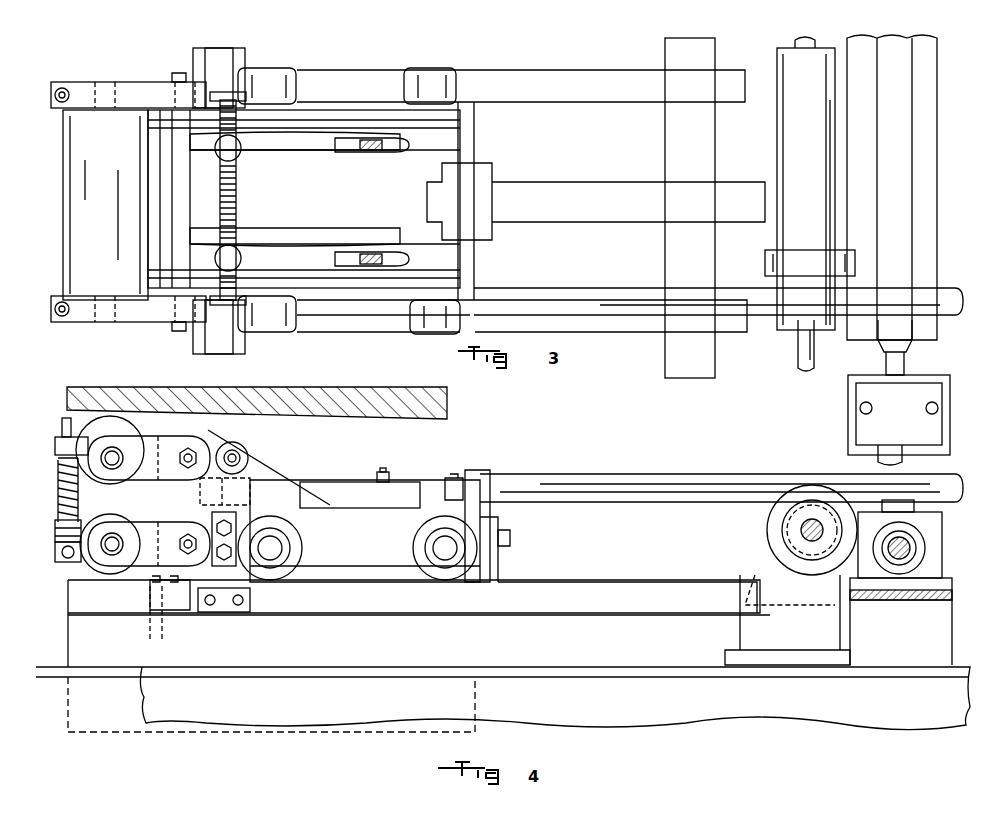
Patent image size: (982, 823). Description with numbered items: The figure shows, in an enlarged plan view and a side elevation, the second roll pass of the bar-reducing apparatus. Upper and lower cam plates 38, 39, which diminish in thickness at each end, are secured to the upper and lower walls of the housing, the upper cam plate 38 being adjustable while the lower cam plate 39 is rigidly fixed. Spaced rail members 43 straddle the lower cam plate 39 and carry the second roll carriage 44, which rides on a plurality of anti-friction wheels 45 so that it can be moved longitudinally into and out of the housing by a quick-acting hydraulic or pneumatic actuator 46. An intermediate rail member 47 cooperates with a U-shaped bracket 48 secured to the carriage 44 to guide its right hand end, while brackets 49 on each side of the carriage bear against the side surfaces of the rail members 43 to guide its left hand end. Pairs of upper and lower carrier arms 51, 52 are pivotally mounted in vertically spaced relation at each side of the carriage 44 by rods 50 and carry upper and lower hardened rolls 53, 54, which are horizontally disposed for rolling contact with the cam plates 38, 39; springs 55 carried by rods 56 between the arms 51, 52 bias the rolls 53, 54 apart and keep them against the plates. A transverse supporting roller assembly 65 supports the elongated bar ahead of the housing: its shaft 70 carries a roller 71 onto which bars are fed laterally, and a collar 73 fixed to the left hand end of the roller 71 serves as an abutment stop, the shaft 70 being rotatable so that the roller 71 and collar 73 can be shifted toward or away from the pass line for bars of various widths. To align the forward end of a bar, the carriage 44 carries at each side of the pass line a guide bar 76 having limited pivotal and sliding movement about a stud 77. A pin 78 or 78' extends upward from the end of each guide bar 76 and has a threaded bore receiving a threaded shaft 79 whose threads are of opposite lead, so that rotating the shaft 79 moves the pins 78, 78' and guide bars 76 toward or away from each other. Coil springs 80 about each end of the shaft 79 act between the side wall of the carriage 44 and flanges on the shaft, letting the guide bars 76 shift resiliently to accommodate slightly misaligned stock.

In FIG. 4, the upper cam plate 38 is at (446, 410).
In FIG. 4, the lower cam plate 39 is at (80, 602).
In FIG. 3, the rail members 43 is at (503, 92).
In FIG. 4, the rail members 43 is at (572, 588).
In FIG. 3, the second roll carriage 44 is at (352, 215).
In FIG. 4, the second roll carriage 44 is at (376, 561).
In FIG. 3, the anti-friction wheels 45 is at (456, 70).
In FIG. 4, the anti-friction wheels 45 is at (292, 542).
In FIG. 3, the hydraulic or pneumatic actuator 46 is at (594, 296).
In FIG. 4, the hydraulic or pneumatic actuator 46 is at (602, 476).
In FIG. 3, the rail member 47 is at (594, 184).
In FIG. 3, the U-shaped bracket 48 is at (488, 176).
In FIG. 3, the brackets 49 is at (238, 62).
In FIG. 4, the brackets 49 is at (250, 592).
In FIG. 3, the rods 50 is at (178, 73).
In FIG. 4, the rods 50 is at (192, 457).
In FIG. 3, the upper carrier arms 51 is at (80, 82).
In FIG. 4, the upper carrier arms 51 is at (161, 468).
In FIG. 4, the lower carrier arms 52 is at (146, 530).
In FIG. 3, the upper hardened roll 53 is at (66, 236).
In FIG. 4, the upper hardened roll 53 is at (114, 428).
In FIG. 4, the lower hardened roll 54 is at (118, 578).
In FIG. 4, the springs 55 is at (58, 484).
In FIG. 3, the rods 56 is at (56, 84).
In FIG. 4, the rods 56 is at (62, 426).
In FIG. 3, the transverse supporting roller assemblies 65 is at (777, 140).
In FIG. 4, the transverse supporting roller assemblies 65 is at (766, 525).
In FIG. 3, the shaft 70 is at (797, 348).
In FIG. 4, the shaft 70 is at (812, 541).
In FIG. 3, the roller 71 is at (782, 64).
In FIG. 3, the collar 73 is at (766, 252).
In FIG. 4, the collar 73 is at (766, 536).
In FIG. 3, the guide bar 76 is at (345, 156).
In FIG. 4, the guide bar 76 is at (412, 480).
In FIG. 3, the stud 77 is at (384, 148).
In FIG. 4, the stud 77 is at (384, 468).
In FIG. 3, the pin 78 is at (256, 160).
In FIG. 4, the pin 78 is at (256, 473).
In FIG. 3, the pin 78' is at (252, 250).
In FIG. 3, the threaded shaft 79 is at (238, 218).
In FIG. 3, the coil springs 80 is at (240, 106).